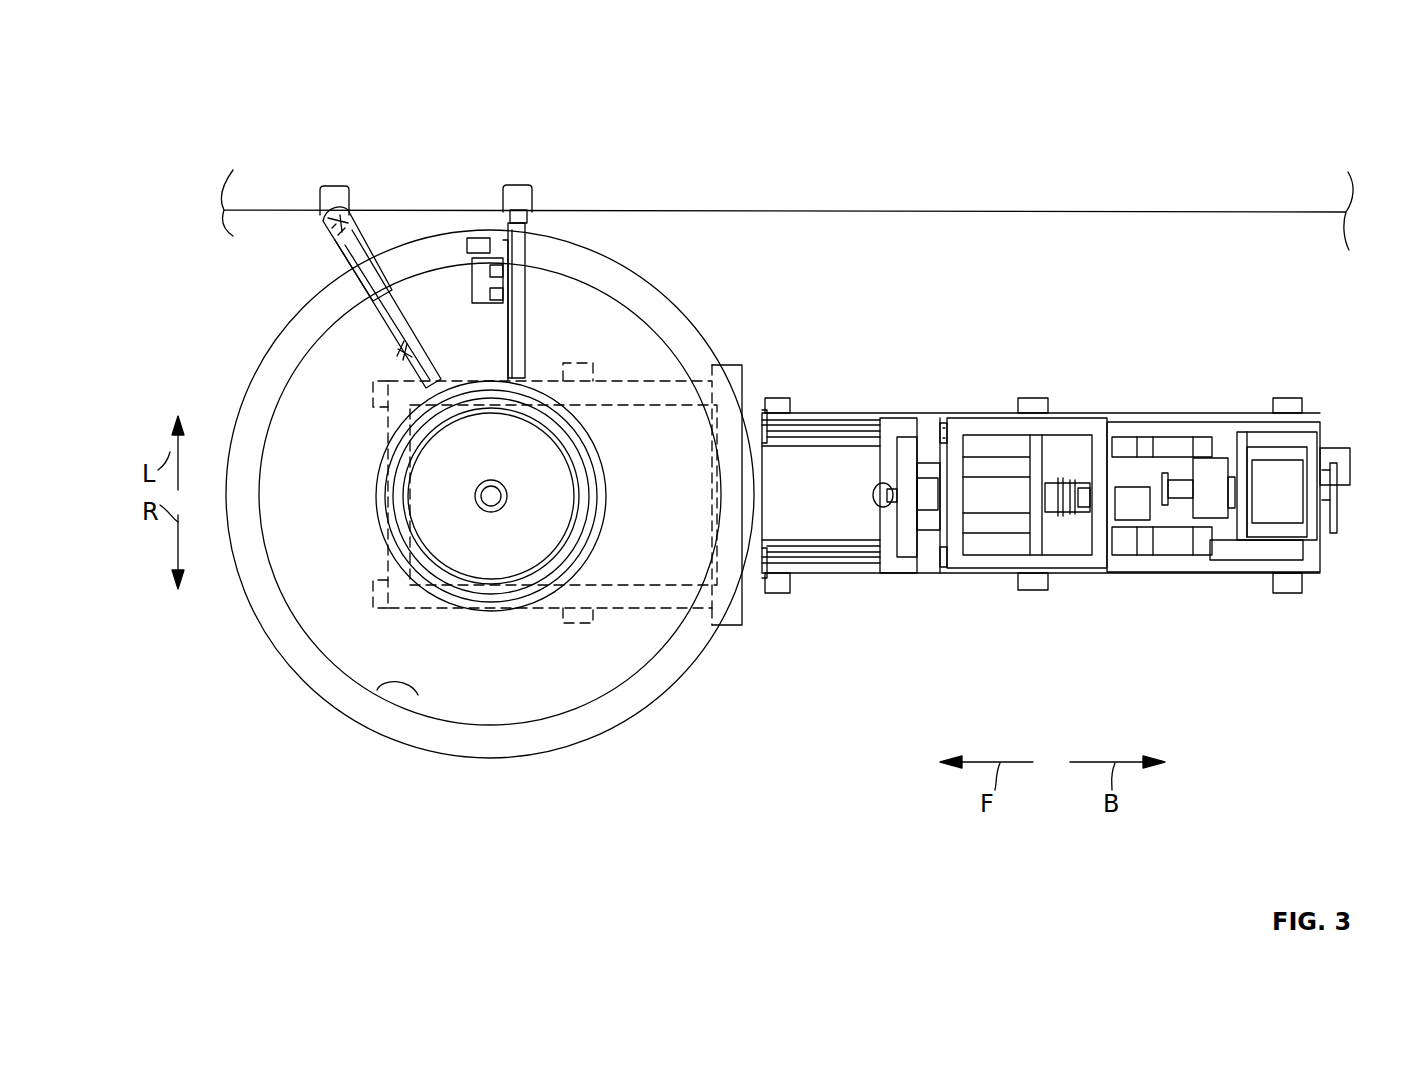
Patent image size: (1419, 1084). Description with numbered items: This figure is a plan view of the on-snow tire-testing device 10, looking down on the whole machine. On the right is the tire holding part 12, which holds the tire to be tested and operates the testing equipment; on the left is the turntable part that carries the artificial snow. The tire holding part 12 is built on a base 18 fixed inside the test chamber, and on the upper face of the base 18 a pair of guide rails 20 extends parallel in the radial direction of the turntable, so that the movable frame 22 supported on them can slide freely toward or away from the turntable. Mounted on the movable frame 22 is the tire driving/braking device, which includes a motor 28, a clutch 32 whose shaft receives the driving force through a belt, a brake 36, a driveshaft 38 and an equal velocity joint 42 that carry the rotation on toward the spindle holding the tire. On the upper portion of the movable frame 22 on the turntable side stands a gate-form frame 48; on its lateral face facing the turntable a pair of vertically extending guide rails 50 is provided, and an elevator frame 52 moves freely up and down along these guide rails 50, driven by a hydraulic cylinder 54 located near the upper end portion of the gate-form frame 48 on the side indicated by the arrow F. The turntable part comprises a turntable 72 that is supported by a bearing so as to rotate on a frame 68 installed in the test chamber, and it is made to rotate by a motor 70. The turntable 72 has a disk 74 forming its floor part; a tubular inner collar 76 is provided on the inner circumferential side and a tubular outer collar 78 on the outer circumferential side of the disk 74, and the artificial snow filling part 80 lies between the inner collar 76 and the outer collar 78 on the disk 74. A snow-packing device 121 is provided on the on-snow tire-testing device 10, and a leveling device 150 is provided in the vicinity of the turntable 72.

The on-snow tire-testing device 10 is at (851, 178).
The tire holding part 12 is at (298, 285).
The base 18 is at (868, 585).
The guide rails 20 is at (840, 425).
The movable frame 22 is at (1333, 573).
The motor 28 is at (1203, 465).
The clutch 32 is at (1278, 478).
The brake 36 is at (1336, 472).
The driveshaft 38 is at (1090, 535).
The equal velocity joint 42 is at (1065, 490).
The gate-form frame 48 is at (968, 545).
The guide rails 50 is at (945, 430).
The elevator frame 52 is at (888, 430).
The hydraulic cylinder 54 is at (872, 494).
The frame 68 is at (630, 381).
The motor 70 is at (1172, 540).
The turntable 72 is at (533, 773).
The disk 74 is at (377, 498).
The inner collar 76 is at (605, 482).
The outer collar 78 is at (418, 702).
The artificial snow filling part 80 is at (624, 661).
The snow-packing device 121 is at (540, 325).
The leveling device 150 is at (428, 333).